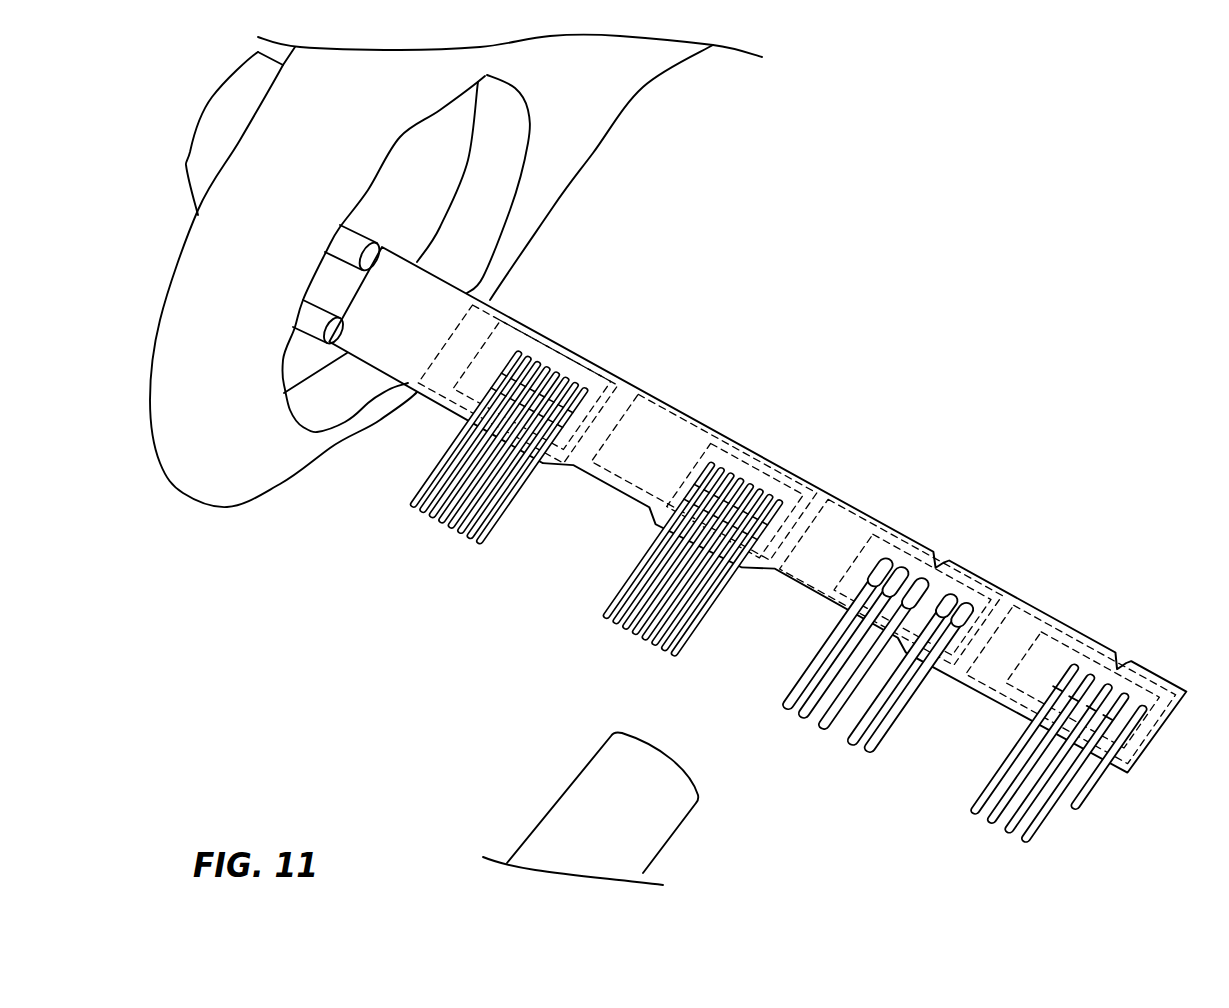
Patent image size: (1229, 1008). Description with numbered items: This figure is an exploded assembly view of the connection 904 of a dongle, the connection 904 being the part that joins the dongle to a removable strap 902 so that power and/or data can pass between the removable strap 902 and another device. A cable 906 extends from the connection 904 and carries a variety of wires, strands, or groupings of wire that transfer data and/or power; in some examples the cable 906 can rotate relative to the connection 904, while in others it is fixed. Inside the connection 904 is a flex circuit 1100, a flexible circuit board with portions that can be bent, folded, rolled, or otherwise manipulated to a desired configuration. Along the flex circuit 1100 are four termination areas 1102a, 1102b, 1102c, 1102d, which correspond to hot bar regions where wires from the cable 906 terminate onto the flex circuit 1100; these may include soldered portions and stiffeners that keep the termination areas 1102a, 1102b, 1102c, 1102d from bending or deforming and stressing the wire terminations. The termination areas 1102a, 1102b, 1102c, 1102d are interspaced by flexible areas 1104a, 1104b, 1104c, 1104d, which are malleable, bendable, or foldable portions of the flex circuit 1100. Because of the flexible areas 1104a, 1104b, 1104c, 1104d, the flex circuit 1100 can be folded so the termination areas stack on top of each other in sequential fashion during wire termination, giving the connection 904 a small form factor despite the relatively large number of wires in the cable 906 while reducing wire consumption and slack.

The removable strap 902 is at (645, 65).
The connection 904 is at (357, 497).
The cable 906 is at (662, 815).
The flex circuit 1100 is at (410, 353).
The termination area 1102a is at (563, 355).
The termination area 1102b is at (760, 465).
The termination area 1102c is at (937, 565).
The termination area 1102d is at (1113, 668).
The flexible area 1104a is at (488, 310).
The flexible area 1104b is at (673, 407).
The flexible area 1104c is at (852, 507).
The flexible area 1104d is at (1033, 612).